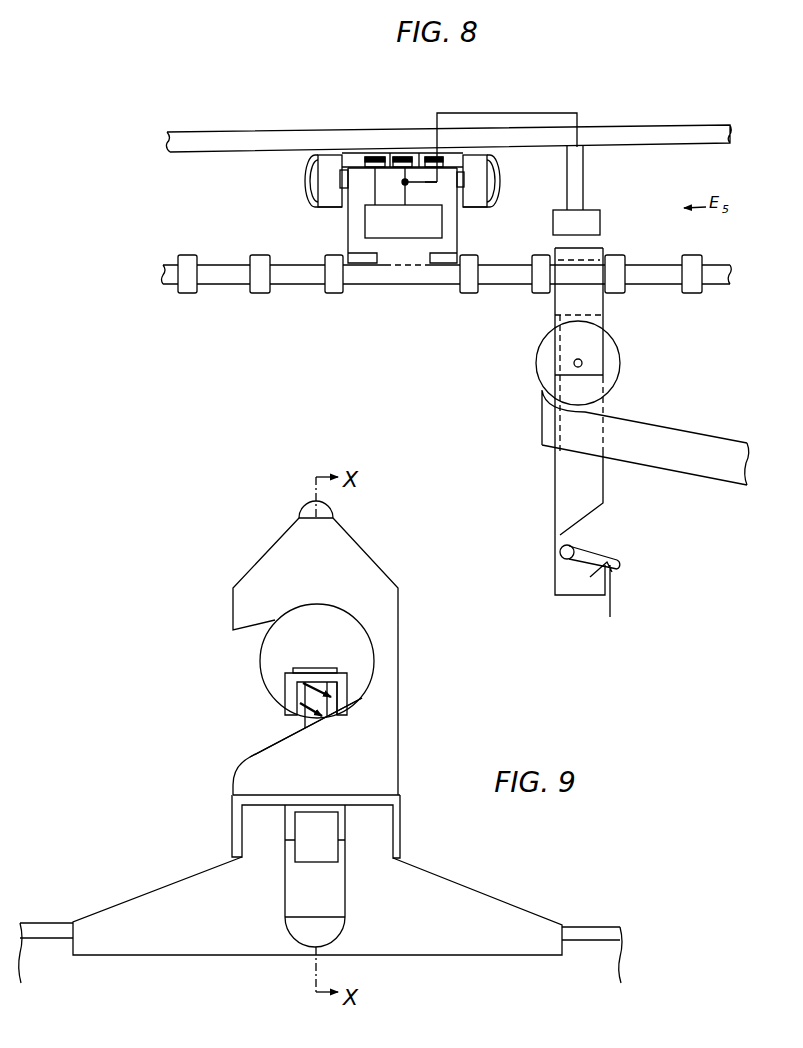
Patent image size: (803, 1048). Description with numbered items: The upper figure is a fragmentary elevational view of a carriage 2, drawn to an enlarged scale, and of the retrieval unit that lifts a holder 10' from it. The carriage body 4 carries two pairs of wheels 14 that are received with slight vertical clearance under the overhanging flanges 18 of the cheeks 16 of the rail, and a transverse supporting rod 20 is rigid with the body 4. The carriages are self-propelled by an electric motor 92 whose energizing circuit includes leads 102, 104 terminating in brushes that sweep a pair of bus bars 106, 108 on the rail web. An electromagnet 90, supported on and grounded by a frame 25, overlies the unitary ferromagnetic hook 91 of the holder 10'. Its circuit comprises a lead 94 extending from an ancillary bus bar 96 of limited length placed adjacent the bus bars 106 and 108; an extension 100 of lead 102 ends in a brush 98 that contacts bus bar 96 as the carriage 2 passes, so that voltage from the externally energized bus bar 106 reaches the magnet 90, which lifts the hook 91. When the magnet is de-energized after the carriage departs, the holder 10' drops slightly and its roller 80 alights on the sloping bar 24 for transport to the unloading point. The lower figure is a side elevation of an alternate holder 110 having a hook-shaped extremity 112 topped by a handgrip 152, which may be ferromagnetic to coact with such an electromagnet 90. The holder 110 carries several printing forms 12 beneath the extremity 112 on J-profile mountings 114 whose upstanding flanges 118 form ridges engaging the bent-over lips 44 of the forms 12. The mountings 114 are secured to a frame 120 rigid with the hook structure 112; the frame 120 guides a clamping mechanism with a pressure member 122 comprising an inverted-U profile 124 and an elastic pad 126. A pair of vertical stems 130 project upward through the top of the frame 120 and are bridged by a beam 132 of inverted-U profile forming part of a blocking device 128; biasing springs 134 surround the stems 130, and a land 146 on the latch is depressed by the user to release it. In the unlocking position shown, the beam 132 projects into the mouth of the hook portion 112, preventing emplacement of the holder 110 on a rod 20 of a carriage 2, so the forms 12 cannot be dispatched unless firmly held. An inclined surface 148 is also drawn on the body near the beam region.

In FIG. 8, the frame 25 is at (700, 128).
In FIG. 8, the lead 94 is at (478, 112).
In FIG. 8, the electromagnet 90 is at (596, 219).
In FIG. 8, the bus bar 108 is at (372, 157).
In FIG. 8, the bus bar 106 is at (405, 157).
In FIG. 8, the ancillary bus bar 96 is at (433, 155).
In FIG. 8, the lead 102 is at (383, 192).
In FIG. 8, the extension 100 is at (427, 183).
In FIG. 8, the electric motor 92 is at (403, 238).
In FIG. 8, the wheels 14 is at (328, 156).
In FIG. 8, the cheeks 16 is at (312, 178).
In FIG. 8, the lead 104 is at (368, 185).
In FIG. 8, the overhanging flanges 18 is at (475, 208).
In FIG. 8, the brush 98 is at (447, 160).
In FIG. 8, the transverse supporting rod 20 is at (297, 284).
In FIG. 9, the transverse supporting rod 20 is at (262, 658).
In FIG. 8, the carriage 2 is at (323, 248).
In FIG. 8, the carriage body 4 is at (355, 241).
In FIG. 8, the hook 91 is at (593, 302).
In FIG. 8, the roller 80 is at (545, 360).
In FIG. 8, the sloping bar 24 is at (688, 460).
In FIG. 8, the holder 10' is at (548, 531).
In FIG. 9, the handgrip 152 is at (308, 507).
In FIG. 9, the hook-shaped extremity 112 is at (412, 747).
In FIG. 9, the inclined surface 148 is at (262, 748).
In FIG. 9, the blocking device 128 is at (281, 707).
In FIG. 9, the land 146 is at (313, 668).
In FIG. 9, the vertical stems 130 is at (317, 718).
In FIG. 9, the biasing springs 134 is at (335, 680).
In FIG. 9, the beam 132 is at (343, 691).
In FIG. 9, the frame 120 is at (232, 822).
In FIG. 9, the pressure member 122 is at (313, 865).
In FIG. 9, the profile 124 is at (338, 820).
In FIG. 9, the elastic pad 126 is at (327, 851).
In FIG. 9, the upstanding flanges 118 is at (332, 927).
In FIG. 9, the J-profile mountings 114 is at (172, 963).
In FIG. 9, the bent-over lips 44 is at (47, 927).
In FIG. 9, the printing forms 12 is at (590, 950).
In FIG. 9, the holder 110 is at (503, 840).